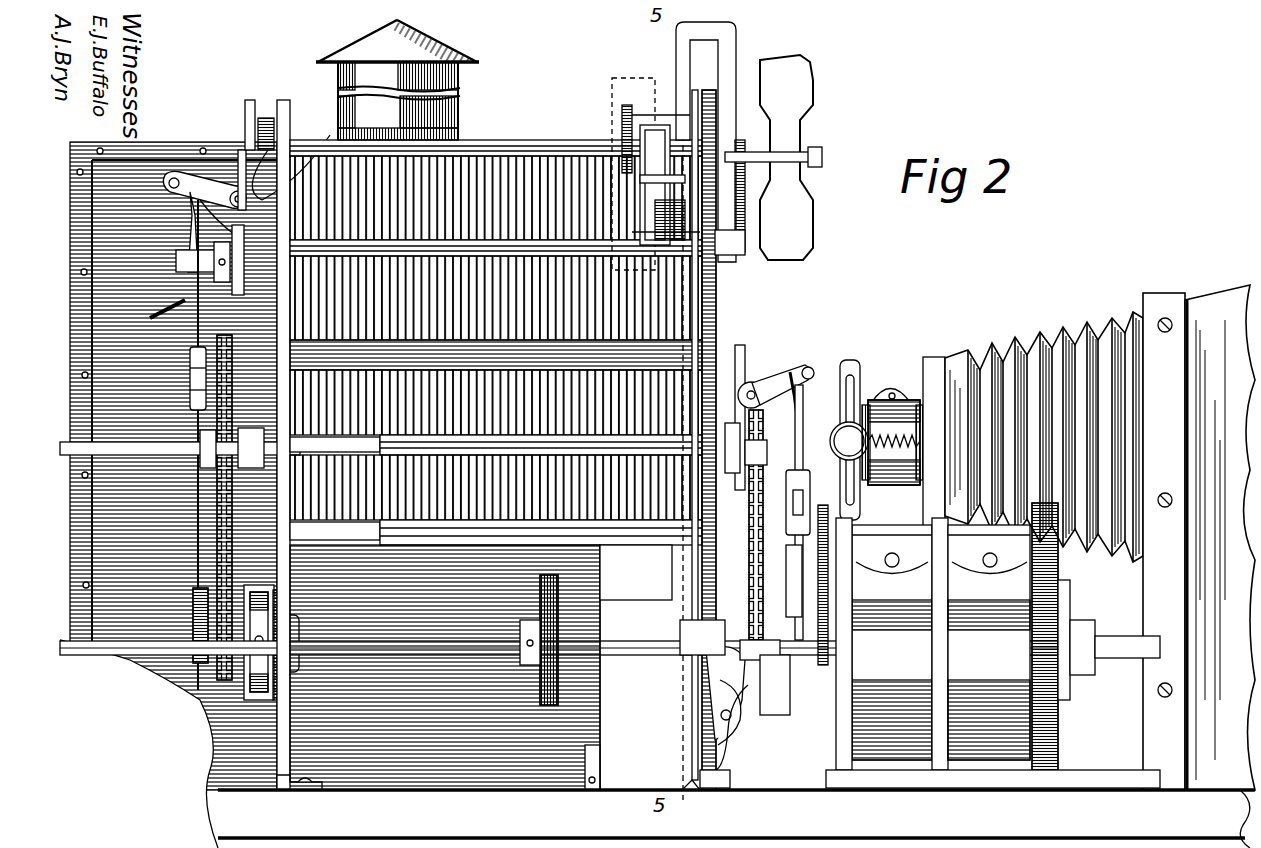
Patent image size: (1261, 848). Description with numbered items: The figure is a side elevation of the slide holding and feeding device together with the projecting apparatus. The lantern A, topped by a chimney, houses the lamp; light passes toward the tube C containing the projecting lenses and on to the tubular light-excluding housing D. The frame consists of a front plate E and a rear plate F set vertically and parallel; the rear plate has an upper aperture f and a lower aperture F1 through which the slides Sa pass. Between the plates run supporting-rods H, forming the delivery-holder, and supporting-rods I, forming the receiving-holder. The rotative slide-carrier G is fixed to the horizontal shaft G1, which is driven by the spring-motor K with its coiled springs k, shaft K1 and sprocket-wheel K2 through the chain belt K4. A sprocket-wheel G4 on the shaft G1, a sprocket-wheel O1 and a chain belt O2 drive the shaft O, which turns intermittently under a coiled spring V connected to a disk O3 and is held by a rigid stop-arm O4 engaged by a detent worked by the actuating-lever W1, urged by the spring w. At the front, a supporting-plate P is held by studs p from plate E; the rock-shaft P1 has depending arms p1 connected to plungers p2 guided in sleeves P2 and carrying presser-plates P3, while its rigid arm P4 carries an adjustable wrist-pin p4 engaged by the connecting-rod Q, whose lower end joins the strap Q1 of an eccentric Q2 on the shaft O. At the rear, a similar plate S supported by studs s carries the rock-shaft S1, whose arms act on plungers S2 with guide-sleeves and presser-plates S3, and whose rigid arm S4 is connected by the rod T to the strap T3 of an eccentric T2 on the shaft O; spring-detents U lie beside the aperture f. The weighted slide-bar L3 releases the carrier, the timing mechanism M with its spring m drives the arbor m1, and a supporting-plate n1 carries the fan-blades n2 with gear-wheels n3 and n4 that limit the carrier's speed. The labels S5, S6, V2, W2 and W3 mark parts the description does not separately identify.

The rear plate F is at (281, 100).
The lowermost slide aperture F1 is at (275, 120).
The supporting-rods H is at (485, 145).
The supporting-rods I is at (430, 525).
The plate S is at (262, 318).
The rock-shaft S1 is at (229, 258).
The plungers S2 is at (255, 265).
The guide-sleeves and presser-plates S3 is at (200, 298).
The rigid arm S4 is at (200, 178).
The slide link S5 is at (190, 215).
The slide block S6 is at (190, 232).
The studs s is at (250, 130).
The slides Sa is at (525, 178).
The spring V is at (261, 642).
The pulley arm V2 is at (270, 178).
The uppermost aperture f is at (296, 161).
The spring-detents U is at (286, 325).
The slide-carrier G is at (718, 300).
The shaft G1 is at (180, 455).
The sprocket-wheel G4 is at (190, 388).
The connecting-rod T is at (215, 490).
The eccentric T2 is at (210, 660).
The strap T3 is at (195, 595).
The shaft O is at (130, 650).
The sprocket-wheel O1 is at (220, 670).
The chain belt O2 is at (215, 520).
The disk O3 is at (285, 610).
The stop-arm O4 is at (228, 670).
The front plate E is at (718, 290).
The weighted slide-bar L3 is at (690, 68).
The timing mechanism M is at (656, 174).
The coiled actuating-spring m is at (660, 240).
The arbor m1 is at (640, 125).
The supporting-plate n1 is at (820, 158).
The fan-blades n2 is at (810, 90).
The gear-wheel n3 is at (745, 222).
The gear-wheel n4 is at (745, 145).
The supporting-plate P is at (720, 362).
The rock-shaft P1 is at (770, 360).
The guide-sleeves P2 is at (760, 450).
The presser-plates P3 is at (725, 425).
The rigid arm P4 is at (815, 365).
The posts or studs p is at (740, 480).
The depending arms p1 is at (802, 430).
The plungers p2 is at (778, 474).
The wrist-pin p4 is at (840, 380).
The connecting-rod Q is at (805, 488).
The strap Q1 is at (803, 581).
The eccentric Q2 is at (803, 606).
The projecting-lens tube C is at (905, 470).
The light-excluding casing D is at (1030, 340).
The spring-motor K is at (1083, 578).
The coiled springs k is at (901, 583).
The shaft K1 is at (908, 662).
The sprocket-wheel K2 is at (750, 720).
The chain belt K4 is at (765, 525).
The actuating-lever W1 is at (700, 560).
The pawl W2 is at (745, 705).
The bracket W3 is at (690, 580).
The spring w is at (735, 740).
The lantern A is at (605, 595).
The hood chimney is at (397, 80).